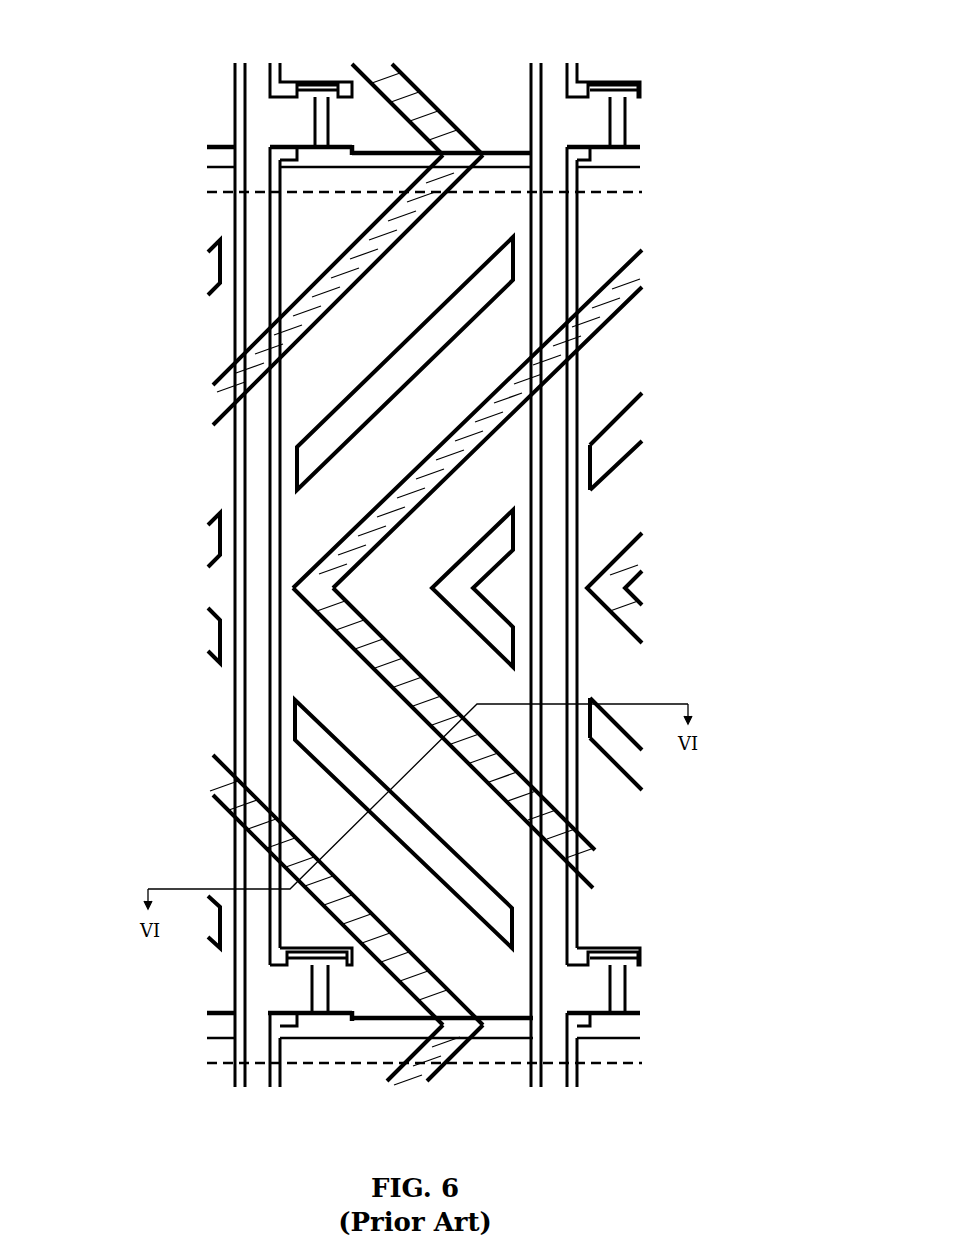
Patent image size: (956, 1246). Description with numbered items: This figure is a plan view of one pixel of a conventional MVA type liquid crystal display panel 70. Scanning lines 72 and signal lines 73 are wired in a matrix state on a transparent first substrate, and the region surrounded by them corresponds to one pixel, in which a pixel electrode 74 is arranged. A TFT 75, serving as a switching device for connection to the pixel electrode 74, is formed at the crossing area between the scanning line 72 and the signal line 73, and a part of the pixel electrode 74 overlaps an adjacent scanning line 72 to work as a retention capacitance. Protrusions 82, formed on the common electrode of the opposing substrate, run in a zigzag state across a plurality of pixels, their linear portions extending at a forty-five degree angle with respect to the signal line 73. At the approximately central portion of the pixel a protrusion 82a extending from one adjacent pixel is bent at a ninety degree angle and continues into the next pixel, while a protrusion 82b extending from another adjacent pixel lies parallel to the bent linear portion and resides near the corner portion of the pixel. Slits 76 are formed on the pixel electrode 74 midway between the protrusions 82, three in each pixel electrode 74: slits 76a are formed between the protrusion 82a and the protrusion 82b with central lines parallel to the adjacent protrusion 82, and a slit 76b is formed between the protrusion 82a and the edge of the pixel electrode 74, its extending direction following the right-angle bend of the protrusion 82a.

The MVA type liquid crystal display panel 70 is at (214, 39).
The scanning line 72 is at (636, 165).
The signal line 73 is at (253, 1082).
The pixel electrode 74 is at (312, 673).
The TFT 75 is at (321, 85).
The slit 76 is at (432, 592).
The slit 76a is at (418, 347).
The slit 76b is at (491, 553).
The protrusion 82 is at (418, 574).
The protrusion 82a is at (390, 673).
The protrusion 82b is at (436, 202).